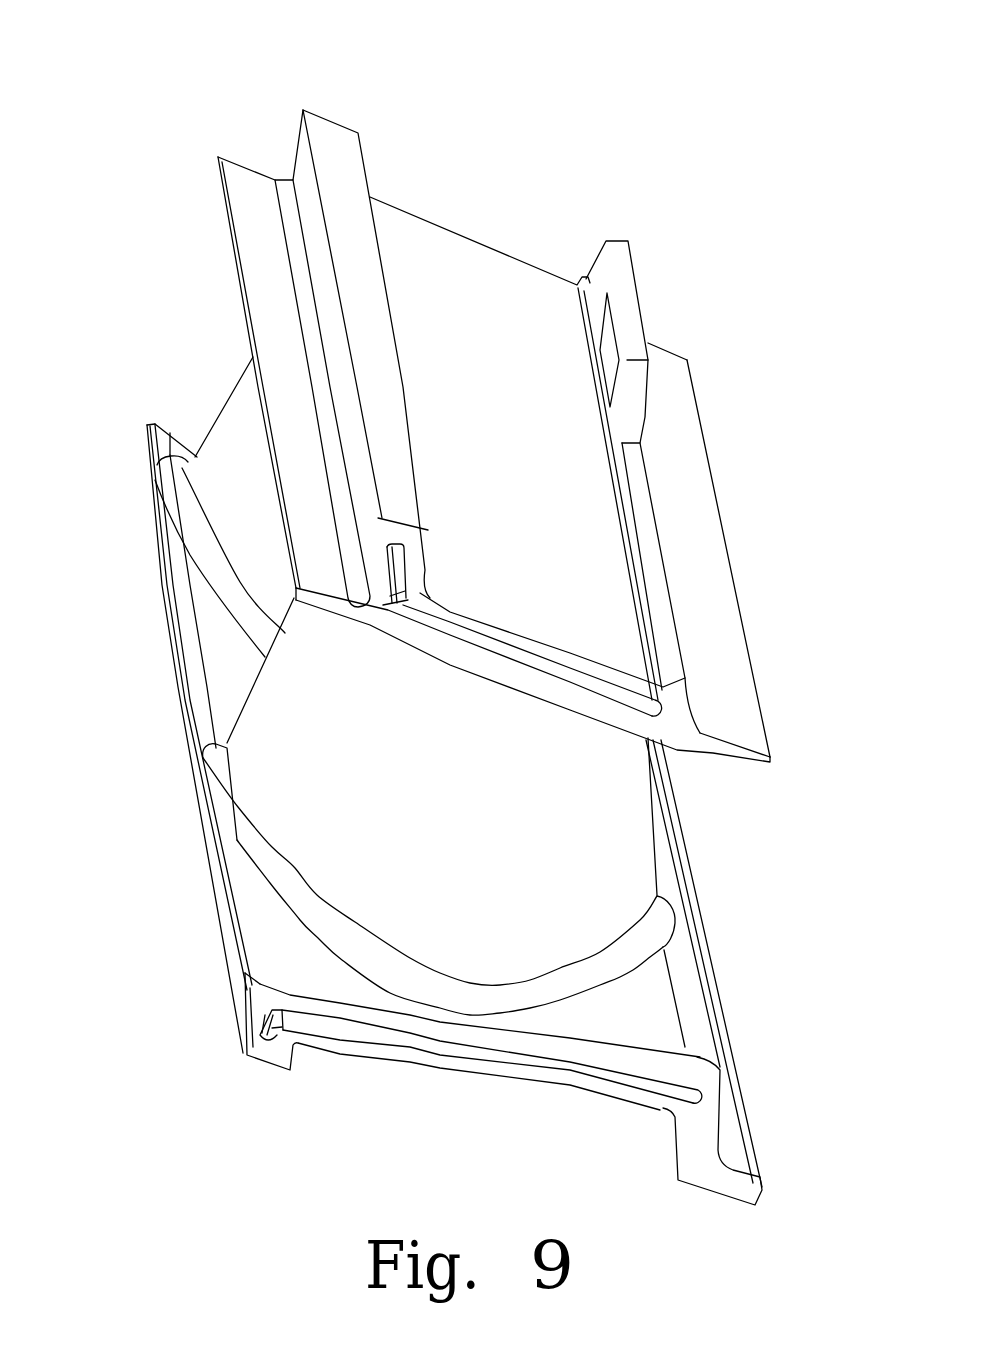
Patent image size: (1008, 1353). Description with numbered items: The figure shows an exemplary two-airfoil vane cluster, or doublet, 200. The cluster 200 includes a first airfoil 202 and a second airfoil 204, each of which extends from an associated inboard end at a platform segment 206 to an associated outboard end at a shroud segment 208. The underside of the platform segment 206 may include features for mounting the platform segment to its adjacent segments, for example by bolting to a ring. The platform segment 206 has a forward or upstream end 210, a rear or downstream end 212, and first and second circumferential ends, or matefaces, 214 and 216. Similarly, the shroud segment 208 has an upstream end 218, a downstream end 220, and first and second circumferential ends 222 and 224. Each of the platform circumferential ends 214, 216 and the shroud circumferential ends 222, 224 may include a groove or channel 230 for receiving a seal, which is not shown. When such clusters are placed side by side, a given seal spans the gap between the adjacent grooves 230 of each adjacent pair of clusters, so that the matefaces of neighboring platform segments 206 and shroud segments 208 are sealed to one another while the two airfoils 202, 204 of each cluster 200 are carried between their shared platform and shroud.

The two-airfoil cluster 200 is at (698, 104).
The first airfoil 202 is at (596, 868).
The second airfoil 204 is at (245, 522).
The platform segment 206 is at (694, 577).
The shroud segment 208 is at (653, 1024).
The forward/upstream end 210 is at (760, 686).
The rear/downstream end 212 is at (223, 200).
The first circumferential end 214 is at (681, 735).
The second circumferential end 216 is at (425, 220).
The upstream end 218 is at (765, 1195).
The downstream end 220 is at (245, 973).
The first circumferential end 222 is at (708, 1170).
The second circumferential end 224 is at (180, 430).
The groove or channel 230 is at (588, 1073).